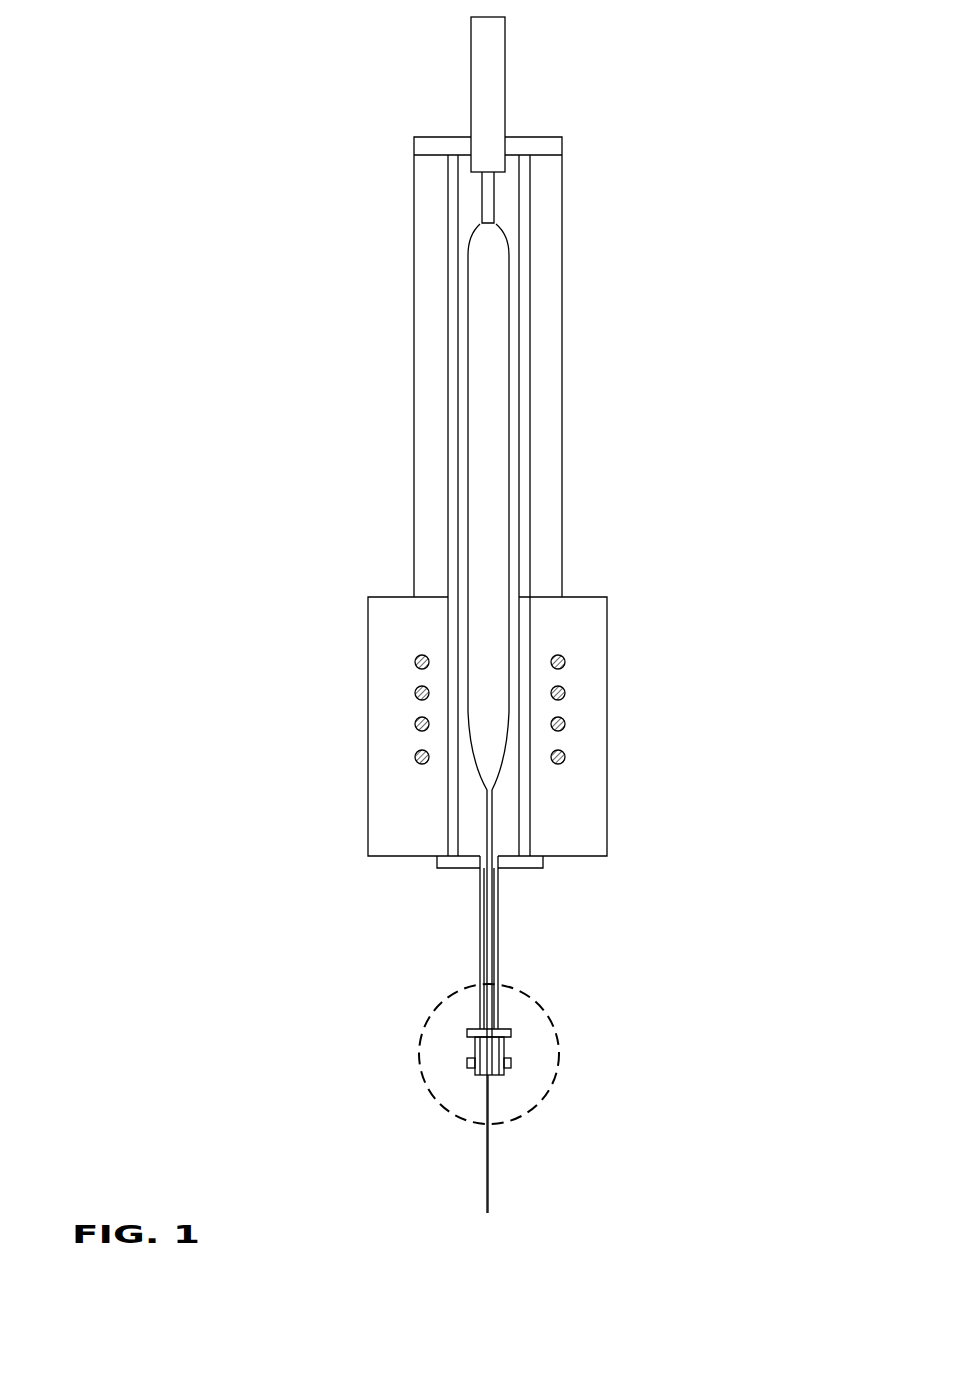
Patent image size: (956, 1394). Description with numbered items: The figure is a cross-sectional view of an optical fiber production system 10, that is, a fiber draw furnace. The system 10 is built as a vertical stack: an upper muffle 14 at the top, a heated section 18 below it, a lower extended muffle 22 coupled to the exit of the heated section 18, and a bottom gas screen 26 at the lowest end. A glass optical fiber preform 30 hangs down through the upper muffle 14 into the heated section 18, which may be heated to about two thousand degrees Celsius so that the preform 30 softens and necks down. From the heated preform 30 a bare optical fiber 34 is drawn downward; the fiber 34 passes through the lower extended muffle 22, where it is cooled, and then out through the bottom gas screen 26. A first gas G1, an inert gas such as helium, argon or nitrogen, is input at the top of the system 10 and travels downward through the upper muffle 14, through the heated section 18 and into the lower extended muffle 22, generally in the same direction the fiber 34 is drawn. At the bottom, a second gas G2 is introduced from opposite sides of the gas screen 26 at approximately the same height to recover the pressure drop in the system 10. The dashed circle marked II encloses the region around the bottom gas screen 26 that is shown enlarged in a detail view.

The optical fiber production system 10 is at (723, 83).
The upper muffle 14 is at (562, 317).
The glass optical fiber preform 30 is at (492, 422).
The heated section 18 is at (607, 620).
The lower extended muffle 22 is at (515, 930).
The bottom gas screen 26 is at (500, 1077).
The bare optical fiber 34 is at (487, 1168).
The detail region shown in FIG. 2 II is at (558, 1021).
The first gas G1 is at (518, 33).
The second gas G2 is at (466, 1063).